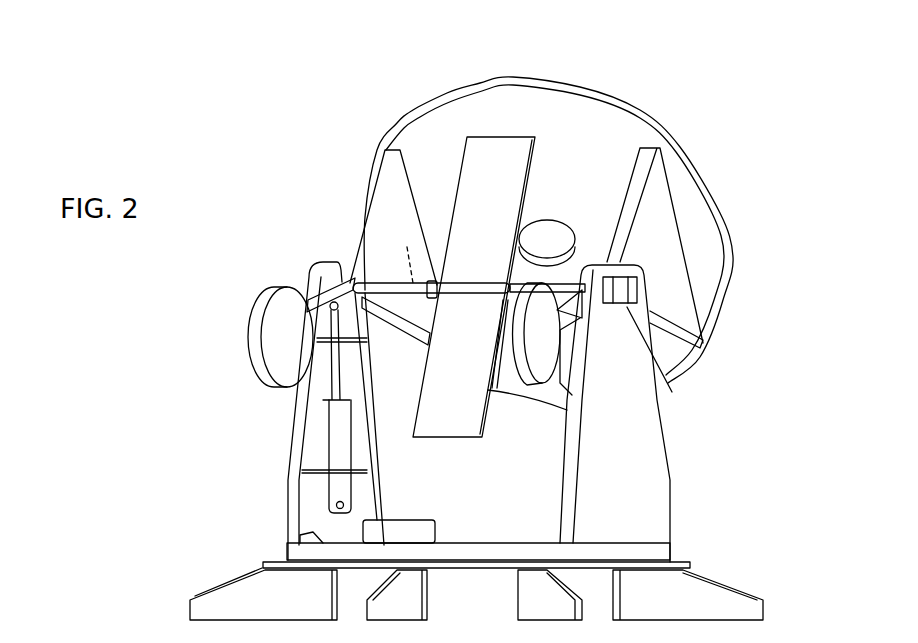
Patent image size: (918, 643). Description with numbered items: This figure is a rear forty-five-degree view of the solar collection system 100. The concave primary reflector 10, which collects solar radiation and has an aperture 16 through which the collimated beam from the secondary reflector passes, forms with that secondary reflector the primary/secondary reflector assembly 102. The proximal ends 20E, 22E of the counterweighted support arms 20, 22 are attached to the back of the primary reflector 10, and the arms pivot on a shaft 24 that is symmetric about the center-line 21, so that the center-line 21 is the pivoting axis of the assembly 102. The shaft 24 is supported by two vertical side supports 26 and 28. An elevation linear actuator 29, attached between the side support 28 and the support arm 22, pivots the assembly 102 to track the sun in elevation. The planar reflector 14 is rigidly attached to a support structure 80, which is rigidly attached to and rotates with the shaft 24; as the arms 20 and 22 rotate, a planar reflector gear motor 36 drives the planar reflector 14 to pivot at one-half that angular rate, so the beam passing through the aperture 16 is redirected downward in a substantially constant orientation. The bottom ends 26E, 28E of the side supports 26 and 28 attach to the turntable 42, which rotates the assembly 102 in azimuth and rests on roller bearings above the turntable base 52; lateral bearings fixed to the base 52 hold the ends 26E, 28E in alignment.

The primary reflector 10 is at (447, 85).
The solar collection system 100 is at (651, 76).
The primary/secondary reflector assembly 102 is at (712, 156).
The planar reflector 14 is at (543, 153).
The aperture 16 is at (543, 248).
The counterweighted support arm 20 is at (517, 385).
The proximal end of support arm 20E is at (682, 228).
The center-line 21 is at (405, 254).
The counterweighted support arm 22 is at (252, 296).
The proximal end of support arm 22E is at (415, 200).
The shaft 24 is at (382, 281).
The vertical side support 26 is at (673, 478).
The bottom end of side support 26E is at (618, 542).
The vertical side support 28 is at (284, 480).
The bottom end of side support 28E is at (300, 535).
The elevation linear actuator 29 is at (335, 452).
The planar reflector gear motor 36 is at (670, 382).
The turntable 42 is at (489, 540).
The turntable base 52 is at (465, 542).
The support structure 80 is at (482, 285).